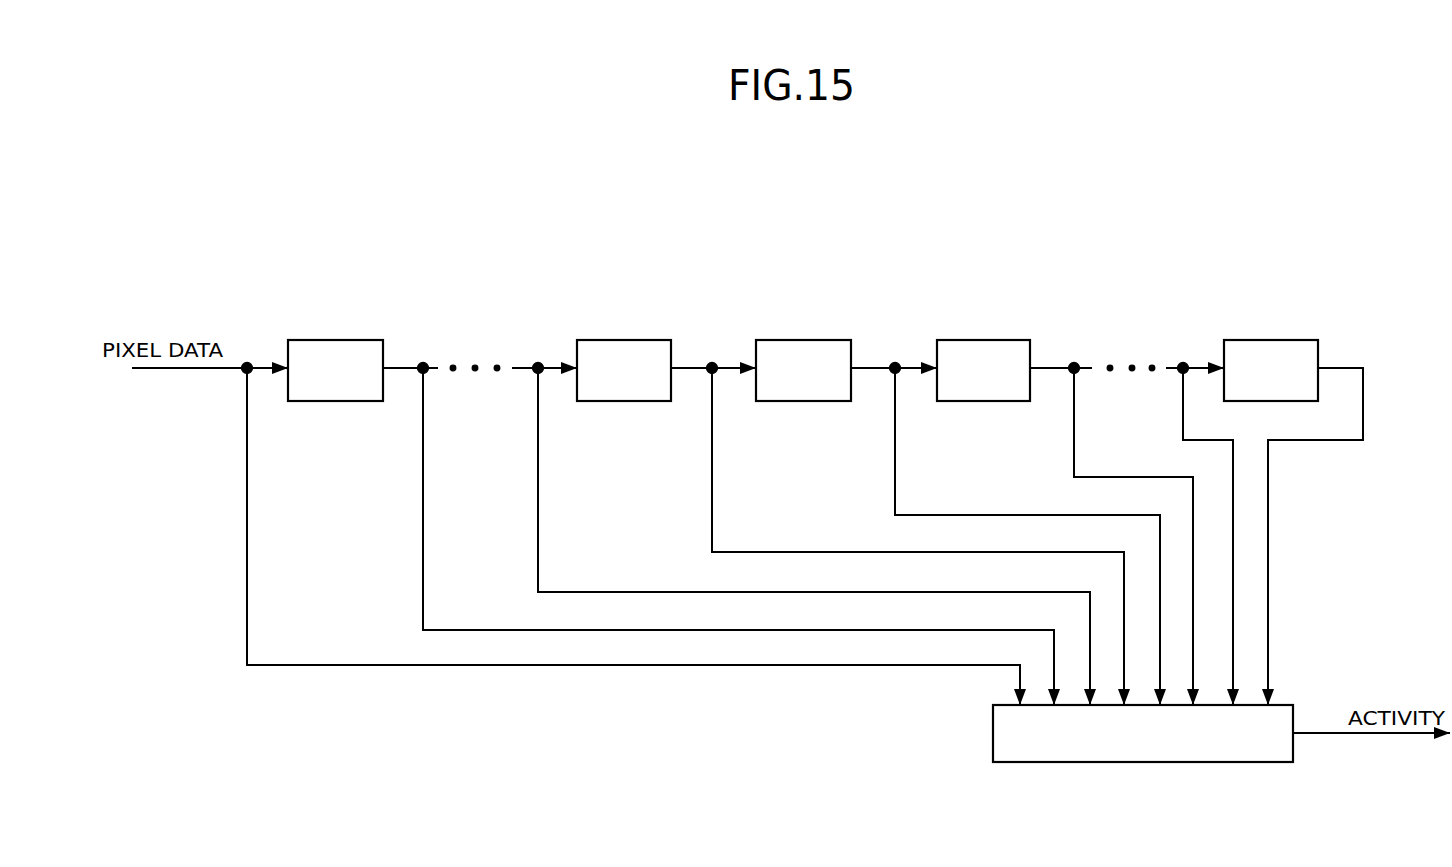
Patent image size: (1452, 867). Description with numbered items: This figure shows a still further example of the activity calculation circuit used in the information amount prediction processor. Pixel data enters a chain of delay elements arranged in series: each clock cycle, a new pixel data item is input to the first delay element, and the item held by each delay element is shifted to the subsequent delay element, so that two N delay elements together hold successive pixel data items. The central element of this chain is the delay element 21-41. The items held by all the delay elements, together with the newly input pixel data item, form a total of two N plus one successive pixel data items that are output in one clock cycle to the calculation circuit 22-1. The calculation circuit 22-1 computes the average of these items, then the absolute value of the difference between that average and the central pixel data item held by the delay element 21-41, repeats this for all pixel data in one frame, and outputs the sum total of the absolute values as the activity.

The delay element 21-41 is at (798, 340).
The calculation circuit 22-1 is at (1143, 762).